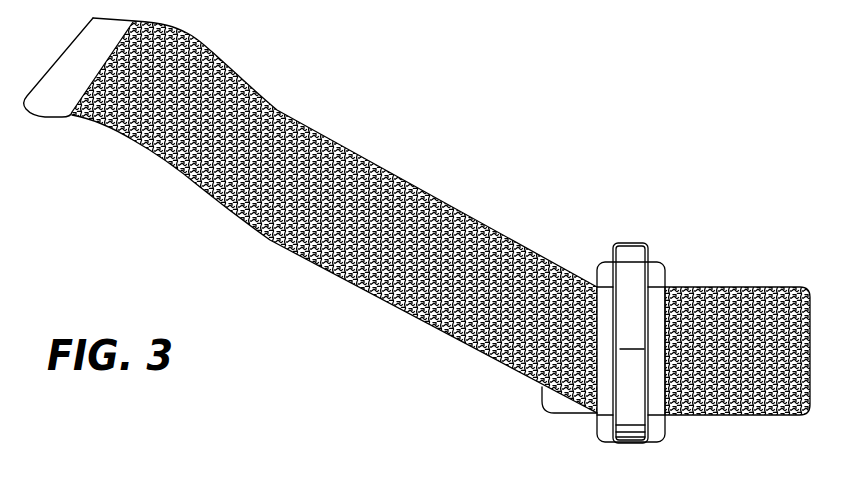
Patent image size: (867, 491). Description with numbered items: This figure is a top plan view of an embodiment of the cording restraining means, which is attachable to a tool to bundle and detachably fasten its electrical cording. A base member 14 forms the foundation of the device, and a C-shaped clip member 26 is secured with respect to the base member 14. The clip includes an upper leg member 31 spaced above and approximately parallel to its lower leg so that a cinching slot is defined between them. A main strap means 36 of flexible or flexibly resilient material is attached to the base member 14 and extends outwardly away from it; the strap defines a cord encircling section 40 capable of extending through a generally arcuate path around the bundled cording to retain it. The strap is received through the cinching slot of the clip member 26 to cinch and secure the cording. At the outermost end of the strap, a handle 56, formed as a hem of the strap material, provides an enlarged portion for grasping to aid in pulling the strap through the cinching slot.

The base member 14 is at (667, 267).
The C-shaped clip member 26 is at (628, 243).
The upper leg member 31 is at (632, 335).
The main strap means 36 is at (403, 187).
The cord encircling section 40 is at (388, 253).
The handle 56 is at (48, 112).